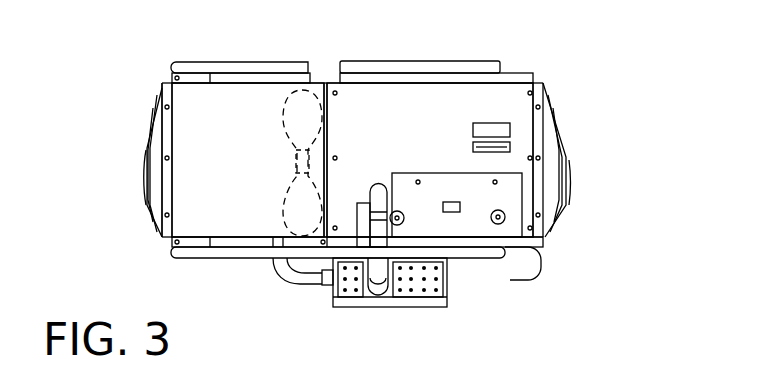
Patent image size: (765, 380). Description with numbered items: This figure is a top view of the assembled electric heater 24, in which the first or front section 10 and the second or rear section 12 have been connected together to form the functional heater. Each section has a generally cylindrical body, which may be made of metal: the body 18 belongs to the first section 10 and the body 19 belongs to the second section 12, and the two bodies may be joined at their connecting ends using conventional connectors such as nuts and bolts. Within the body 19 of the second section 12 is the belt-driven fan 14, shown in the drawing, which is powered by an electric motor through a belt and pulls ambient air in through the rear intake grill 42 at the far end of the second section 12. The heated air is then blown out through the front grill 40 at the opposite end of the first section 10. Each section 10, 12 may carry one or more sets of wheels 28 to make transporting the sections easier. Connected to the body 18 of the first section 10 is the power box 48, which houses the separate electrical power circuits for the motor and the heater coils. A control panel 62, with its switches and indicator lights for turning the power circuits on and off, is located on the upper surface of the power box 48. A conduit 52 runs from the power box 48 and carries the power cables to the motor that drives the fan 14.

The first section 10 is at (375, 52).
The second section 12 is at (140, 233).
The belt-driven fan 14 is at (297, 94).
The body of first section 18 is at (500, 95).
The body of second section 19 is at (190, 128).
The electric heater 24 is at (167, 51).
The wheels 28 is at (541, 265).
The front grill 40 is at (572, 157).
The rear intake grill 42 is at (150, 158).
The power box 48 is at (405, 300).
The conduit 52 is at (288, 274).
The control panel 62 is at (330, 291).